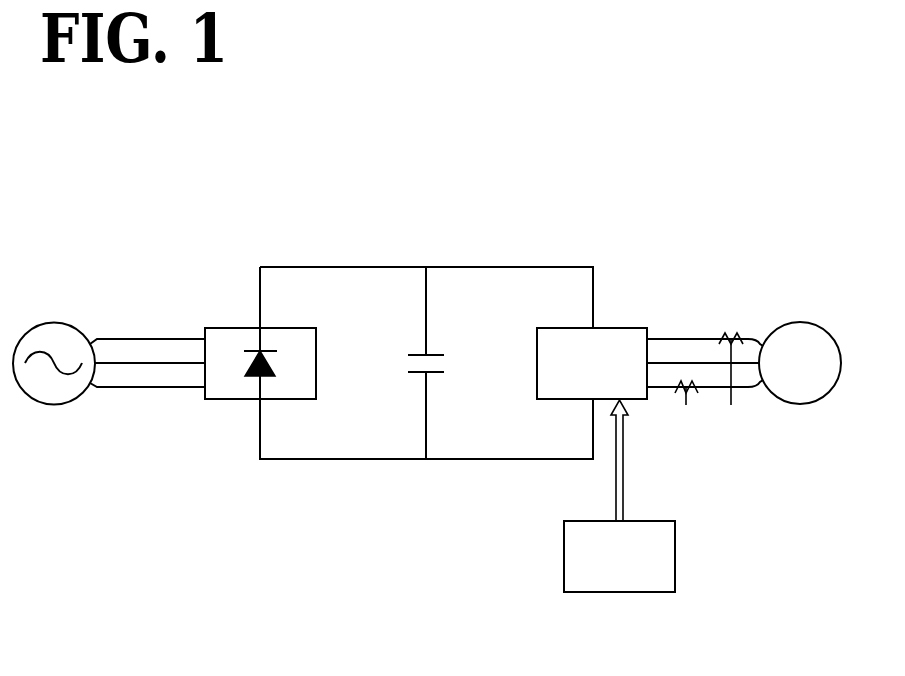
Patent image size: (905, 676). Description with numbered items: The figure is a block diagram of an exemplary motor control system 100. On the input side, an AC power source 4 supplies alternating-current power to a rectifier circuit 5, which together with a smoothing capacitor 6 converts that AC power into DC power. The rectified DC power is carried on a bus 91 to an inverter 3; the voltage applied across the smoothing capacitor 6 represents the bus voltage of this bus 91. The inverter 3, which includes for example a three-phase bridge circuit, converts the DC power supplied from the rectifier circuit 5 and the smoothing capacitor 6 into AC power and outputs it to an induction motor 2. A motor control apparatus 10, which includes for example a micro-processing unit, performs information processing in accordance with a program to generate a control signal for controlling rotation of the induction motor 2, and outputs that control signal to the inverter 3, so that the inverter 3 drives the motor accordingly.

The motor control system 100 is at (106, 160).
The AC power source 4 is at (55, 322).
The rectifier circuit 5 is at (230, 328).
The bus 91 is at (503, 267).
The smoothing capacitor 6 is at (418, 355).
The inverter 3 is at (628, 328).
The induction motor 2 is at (800, 322).
The motor control apparatus 10 is at (620, 592).